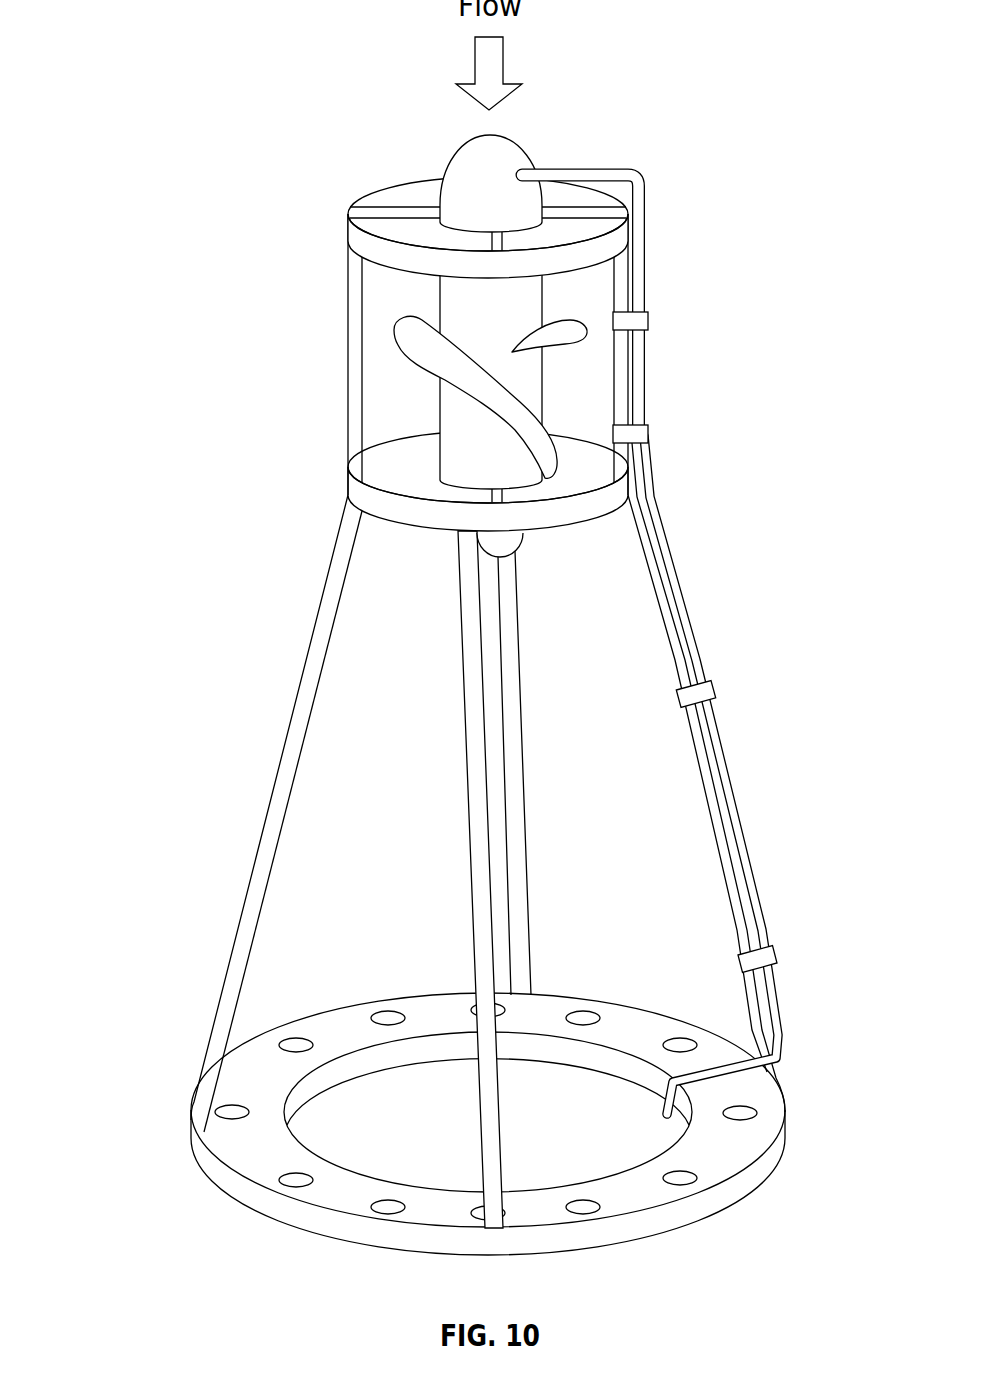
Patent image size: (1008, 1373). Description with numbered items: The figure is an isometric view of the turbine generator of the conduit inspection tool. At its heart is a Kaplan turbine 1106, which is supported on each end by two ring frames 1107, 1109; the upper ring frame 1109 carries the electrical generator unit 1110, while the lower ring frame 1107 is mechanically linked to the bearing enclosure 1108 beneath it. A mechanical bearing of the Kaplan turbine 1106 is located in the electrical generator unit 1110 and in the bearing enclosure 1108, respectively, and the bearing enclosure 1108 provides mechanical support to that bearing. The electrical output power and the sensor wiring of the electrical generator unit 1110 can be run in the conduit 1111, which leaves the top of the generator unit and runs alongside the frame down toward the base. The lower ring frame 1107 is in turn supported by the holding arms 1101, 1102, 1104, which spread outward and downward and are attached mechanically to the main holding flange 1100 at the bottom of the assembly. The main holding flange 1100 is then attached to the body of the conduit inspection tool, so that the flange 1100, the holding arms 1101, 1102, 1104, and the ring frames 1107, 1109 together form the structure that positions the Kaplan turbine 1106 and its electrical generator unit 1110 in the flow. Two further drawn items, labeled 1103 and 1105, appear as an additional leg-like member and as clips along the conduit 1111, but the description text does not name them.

The main holding flange 1100 is at (177, 1143).
The holding arm 1101 is at (256, 821).
The holding arm 1102 is at (541, 854).
The support leg 1103 is at (771, 877).
The holding arm 1104 is at (682, 750).
The clip 1105 is at (728, 684).
The Kaplan turbine 1106 is at (424, 402).
The ring frame 1107 is at (335, 481).
The bearing enclosure 1108 is at (531, 544).
The ring frame 1109 is at (335, 232).
The electrical generator unit 1110 is at (438, 160).
The conduit 1111 is at (549, 158).